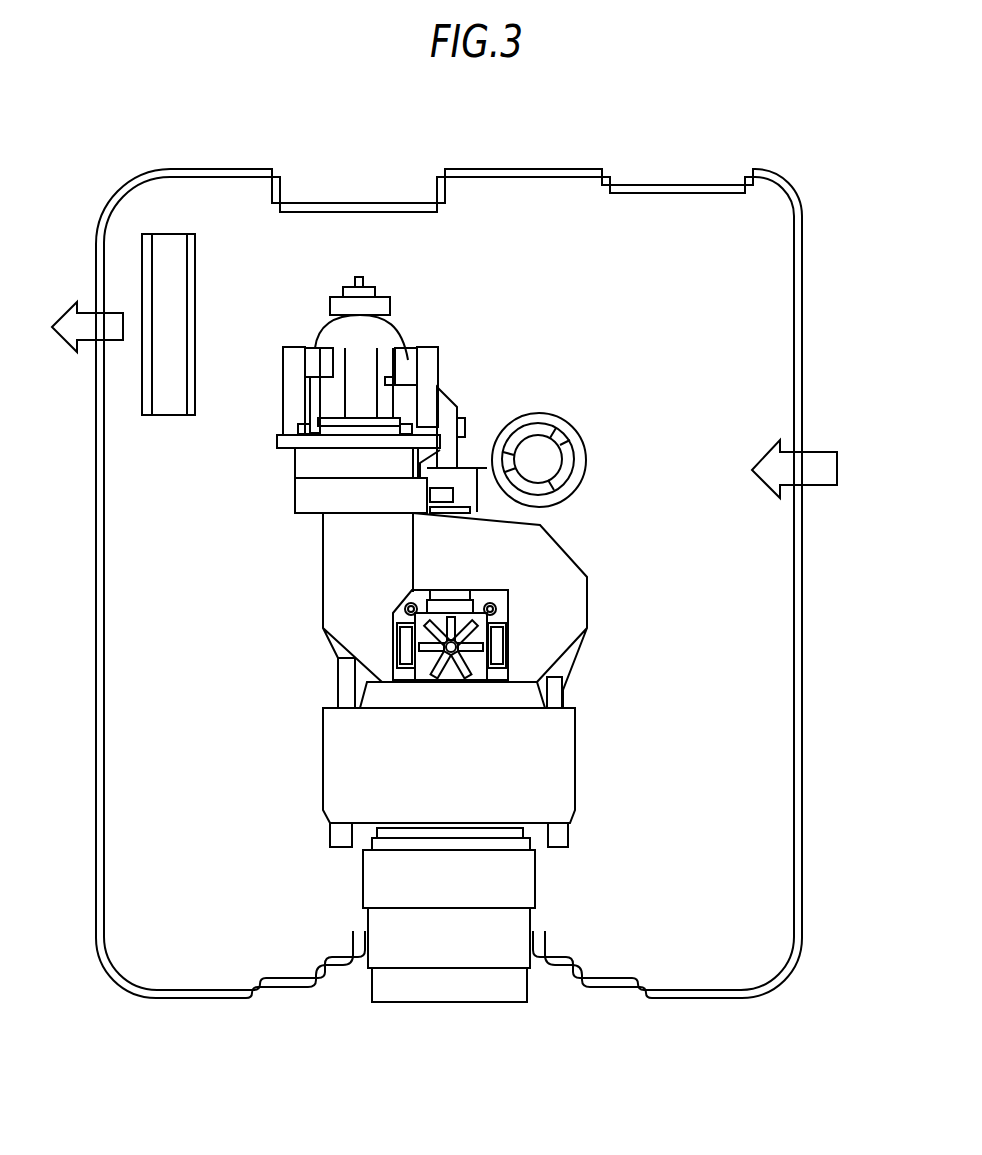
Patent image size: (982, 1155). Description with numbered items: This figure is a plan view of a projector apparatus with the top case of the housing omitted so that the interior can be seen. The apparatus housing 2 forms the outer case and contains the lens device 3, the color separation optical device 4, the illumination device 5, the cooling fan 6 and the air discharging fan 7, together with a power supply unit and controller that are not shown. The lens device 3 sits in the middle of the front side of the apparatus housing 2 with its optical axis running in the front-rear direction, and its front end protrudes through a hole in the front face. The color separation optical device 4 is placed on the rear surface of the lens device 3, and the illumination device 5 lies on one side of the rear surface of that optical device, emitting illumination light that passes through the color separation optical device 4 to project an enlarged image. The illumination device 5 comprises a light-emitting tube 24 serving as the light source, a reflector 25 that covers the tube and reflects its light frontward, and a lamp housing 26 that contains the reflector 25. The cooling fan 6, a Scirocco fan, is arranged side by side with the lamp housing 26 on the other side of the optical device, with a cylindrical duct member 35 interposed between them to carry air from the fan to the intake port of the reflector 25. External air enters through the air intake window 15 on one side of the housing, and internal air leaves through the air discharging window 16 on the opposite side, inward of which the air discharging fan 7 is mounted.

The apparatus housing 2 is at (192, 999).
The lens device 3 is at (445, 1016).
The color separation optical device 4 is at (605, 662).
The illumination device 5 is at (264, 524).
The cooling fan 6 is at (587, 420).
The air discharging fan 7 is at (168, 415).
The air intake window 15 is at (801, 535).
The air discharging window 16 is at (96, 420).
The light-emitting tube 24 is at (363, 278).
The reflector 25 is at (330, 336).
The lamp housing 26 is at (283, 413).
The duct member 35 is at (472, 470).